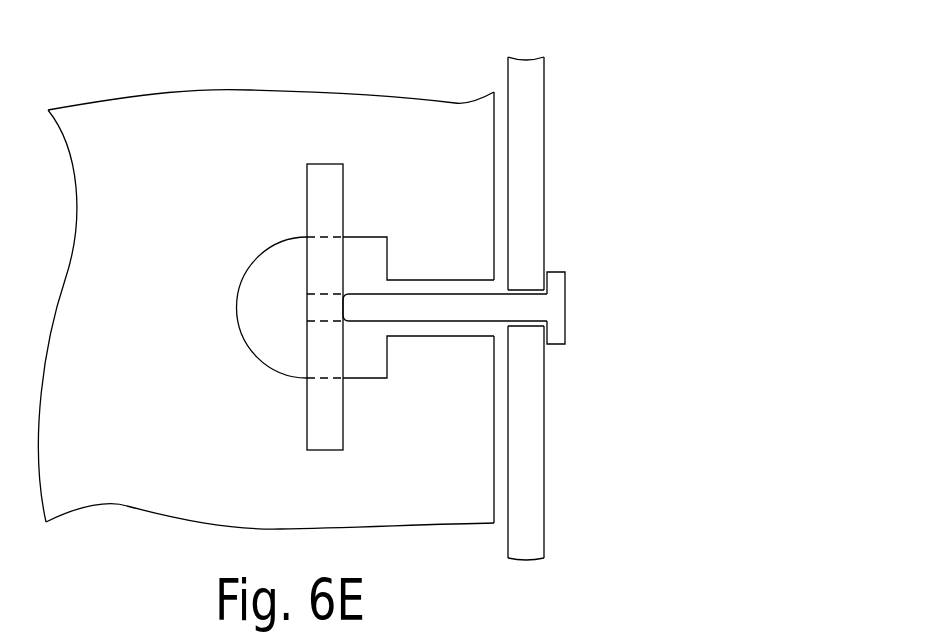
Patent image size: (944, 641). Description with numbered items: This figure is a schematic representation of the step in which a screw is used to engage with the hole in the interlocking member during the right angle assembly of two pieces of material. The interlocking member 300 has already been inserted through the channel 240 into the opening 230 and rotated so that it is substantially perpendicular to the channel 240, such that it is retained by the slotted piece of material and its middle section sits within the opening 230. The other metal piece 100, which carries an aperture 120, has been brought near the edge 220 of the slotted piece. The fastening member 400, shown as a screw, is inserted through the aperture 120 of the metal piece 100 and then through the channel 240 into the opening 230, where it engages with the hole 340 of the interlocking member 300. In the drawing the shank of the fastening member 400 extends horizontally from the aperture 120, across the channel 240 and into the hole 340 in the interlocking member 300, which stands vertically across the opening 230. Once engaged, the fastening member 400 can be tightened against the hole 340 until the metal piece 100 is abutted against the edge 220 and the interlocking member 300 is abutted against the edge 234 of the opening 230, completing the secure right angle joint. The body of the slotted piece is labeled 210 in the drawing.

The metal piece 100 is at (537, 67).
The aperture 120 is at (527, 288).
The base body 210 is at (132, 417).
The edge 220 is at (492, 479).
The opening 230 is at (268, 270).
The edge of the opening 234 is at (388, 252).
The channel 240 is at (405, 328).
The interlocking member 300 is at (314, 152).
The hole 340 is at (310, 307).
The fastening member 400 is at (543, 307).